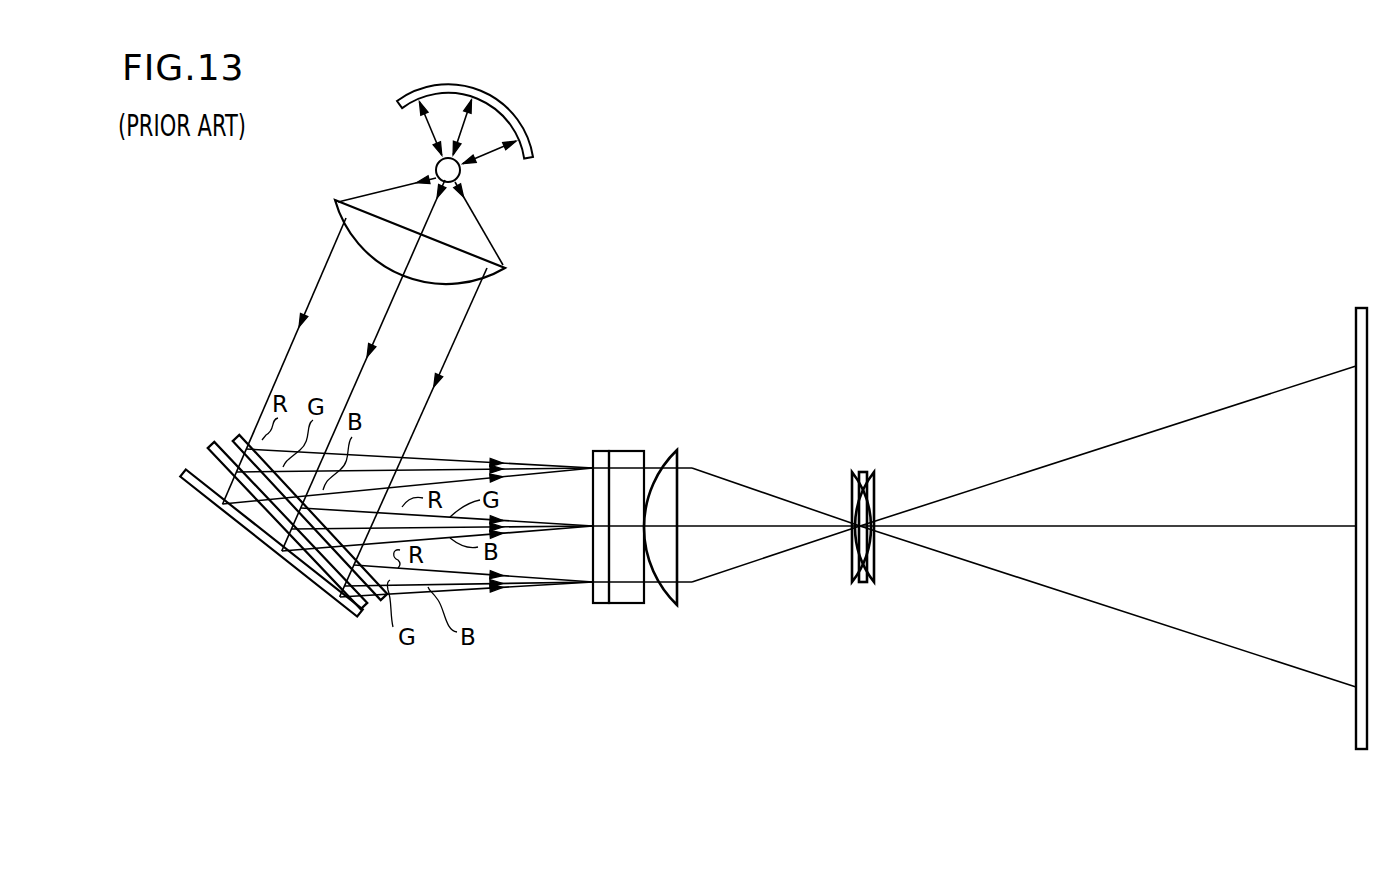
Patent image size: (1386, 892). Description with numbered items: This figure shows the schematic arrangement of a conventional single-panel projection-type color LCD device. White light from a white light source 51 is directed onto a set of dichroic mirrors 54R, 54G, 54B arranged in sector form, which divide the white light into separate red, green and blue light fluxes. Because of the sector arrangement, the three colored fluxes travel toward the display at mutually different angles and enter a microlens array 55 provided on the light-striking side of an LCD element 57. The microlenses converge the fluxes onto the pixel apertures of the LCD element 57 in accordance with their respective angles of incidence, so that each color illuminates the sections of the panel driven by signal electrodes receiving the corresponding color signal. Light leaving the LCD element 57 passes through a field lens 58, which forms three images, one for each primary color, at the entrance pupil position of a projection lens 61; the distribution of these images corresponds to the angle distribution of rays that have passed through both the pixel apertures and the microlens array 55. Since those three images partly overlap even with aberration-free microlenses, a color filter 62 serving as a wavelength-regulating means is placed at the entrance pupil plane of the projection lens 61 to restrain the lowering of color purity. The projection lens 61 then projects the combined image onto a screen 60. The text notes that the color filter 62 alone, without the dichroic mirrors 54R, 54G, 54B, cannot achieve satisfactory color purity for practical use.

The white light source 51 is at (459, 173).
The dichroic mirror 54R is at (238, 434).
The dichroic mirror 54G is at (211, 443).
The dichroic mirror 54B is at (184, 477).
The microlens array 55 is at (603, 450).
The LCD element 57 is at (632, 450).
The field lens 58 is at (688, 460).
The screen 60 is at (1354, 326).
The projection lens 61 is at (870, 525).
The color filter 62 is at (862, 470).